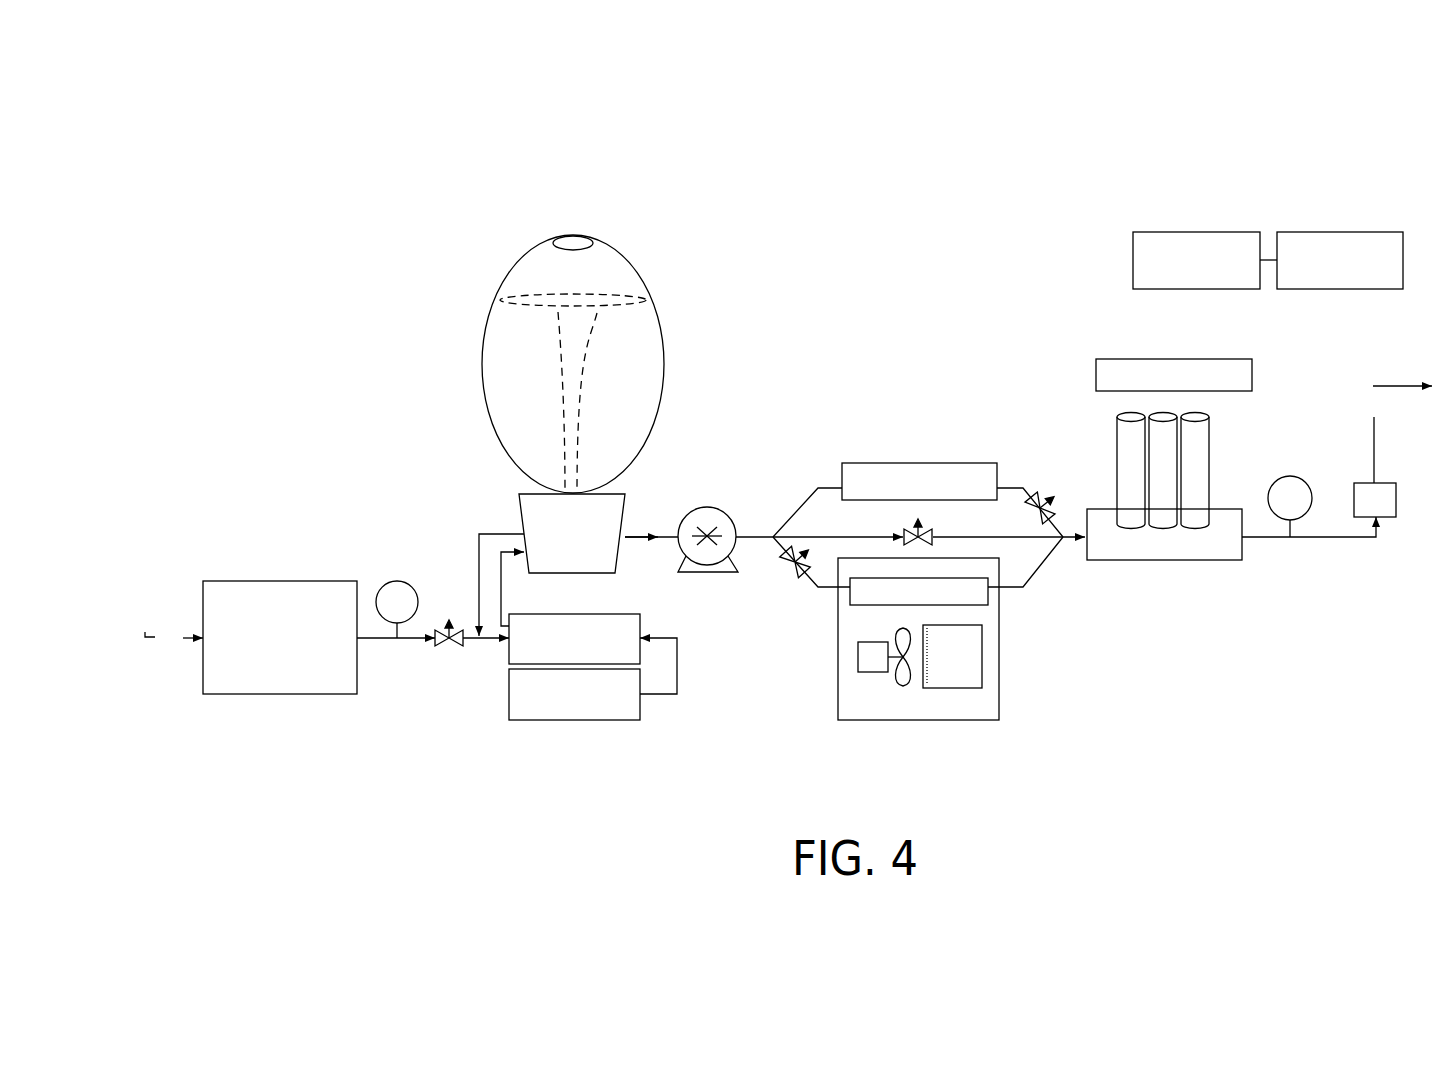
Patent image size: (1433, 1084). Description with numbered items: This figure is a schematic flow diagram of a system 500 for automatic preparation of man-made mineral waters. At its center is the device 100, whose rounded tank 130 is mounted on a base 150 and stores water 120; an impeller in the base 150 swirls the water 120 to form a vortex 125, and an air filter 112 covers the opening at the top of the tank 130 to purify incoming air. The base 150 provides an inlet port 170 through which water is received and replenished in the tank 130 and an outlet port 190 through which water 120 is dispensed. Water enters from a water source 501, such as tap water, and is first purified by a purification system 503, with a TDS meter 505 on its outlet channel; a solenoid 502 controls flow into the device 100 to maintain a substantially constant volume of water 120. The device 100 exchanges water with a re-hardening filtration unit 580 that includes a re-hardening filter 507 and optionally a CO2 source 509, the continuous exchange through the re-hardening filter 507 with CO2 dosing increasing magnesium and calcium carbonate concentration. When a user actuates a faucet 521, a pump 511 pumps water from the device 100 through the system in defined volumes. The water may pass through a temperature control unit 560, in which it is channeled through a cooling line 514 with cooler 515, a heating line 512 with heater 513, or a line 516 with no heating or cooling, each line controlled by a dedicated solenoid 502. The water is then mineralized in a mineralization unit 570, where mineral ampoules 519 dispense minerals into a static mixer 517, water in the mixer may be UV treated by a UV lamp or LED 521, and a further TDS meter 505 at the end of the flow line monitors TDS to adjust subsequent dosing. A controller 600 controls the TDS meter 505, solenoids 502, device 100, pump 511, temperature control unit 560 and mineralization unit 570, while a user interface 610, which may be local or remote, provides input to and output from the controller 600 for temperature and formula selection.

The system 500 is at (158, 258).
The device 100 is at (476, 222).
The air filter 112 is at (583, 242).
The water 120 is at (547, 363).
The vortex 125 is at (523, 295).
The tank 130 is at (483, 375).
The base 150 is at (545, 533).
The inlet port 170 is at (523, 575).
The outlet port 190 is at (479, 534).
The water source 501 is at (182, 620).
The solenoid 502 is at (449, 648).
The purification system 503 is at (290, 588).
The TDS meter 505 is at (397, 600).
The re-hardening filter 507 is at (523, 652).
The CO2 source 509 is at (568, 710).
The pump 511 is at (732, 517).
The heating line 512 is at (813, 487).
The heater 513 is at (918, 463).
The cooling line 514 is at (840, 588).
The cooler 515 is at (1000, 675).
The line 516 is at (1035, 540).
The static mixer 517 is at (1177, 552).
The mineral ampoules 519 is at (1190, 452).
The faucet 521 is at (1108, 375).
The temperature control unit 560 is at (922, 398).
The mineralization unit 570 is at (1215, 598).
The re-hardening filtration unit 580 is at (423, 777).
The controller 600 is at (1163, 233).
The user interface 610 is at (1305, 233).